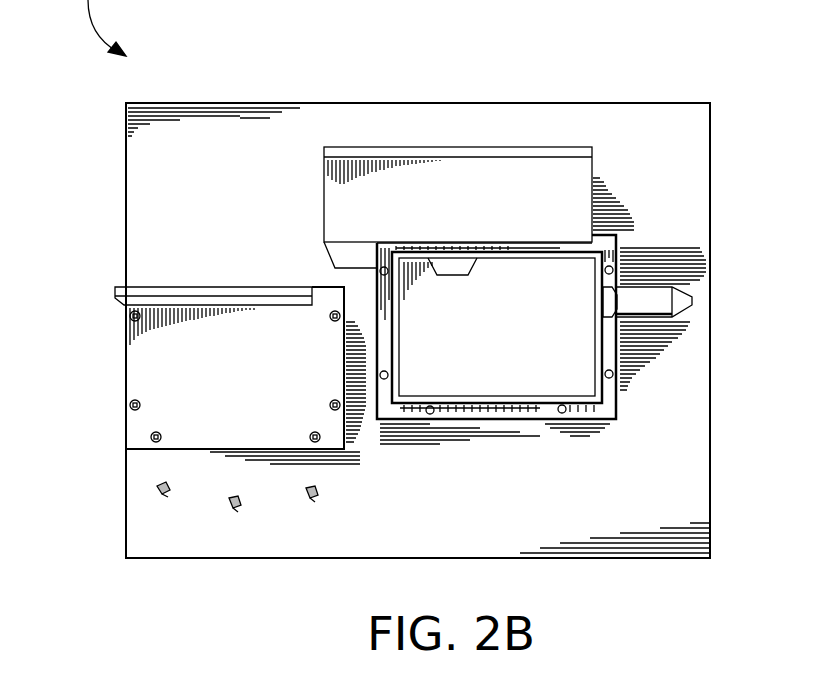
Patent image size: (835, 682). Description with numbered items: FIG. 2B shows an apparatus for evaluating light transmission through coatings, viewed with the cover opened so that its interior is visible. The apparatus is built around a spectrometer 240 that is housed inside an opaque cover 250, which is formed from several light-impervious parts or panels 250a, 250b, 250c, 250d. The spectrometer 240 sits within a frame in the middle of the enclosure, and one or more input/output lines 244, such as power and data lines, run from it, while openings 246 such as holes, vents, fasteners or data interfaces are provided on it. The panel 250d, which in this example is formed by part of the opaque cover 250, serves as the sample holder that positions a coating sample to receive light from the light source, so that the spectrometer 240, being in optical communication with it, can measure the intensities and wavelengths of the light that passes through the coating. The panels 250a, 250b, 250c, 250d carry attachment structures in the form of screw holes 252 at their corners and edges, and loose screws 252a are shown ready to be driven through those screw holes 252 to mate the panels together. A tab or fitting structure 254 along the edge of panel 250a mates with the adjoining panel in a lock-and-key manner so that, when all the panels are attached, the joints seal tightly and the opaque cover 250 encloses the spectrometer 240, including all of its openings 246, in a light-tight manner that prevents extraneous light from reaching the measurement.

The spectrometer 240 is at (570, 368).
The input/output lines 244 is at (660, 303).
The openings 246 is at (605, 332).
The opaque cover 250 is at (425, 182).
The panel 250a is at (165, 382).
The panel 250b is at (620, 252).
The panel 250c is at (580, 203).
The sample holder 250d is at (577, 150).
The screw holes 252 is at (129, 315).
The screws 252a is at (158, 488).
The tabs or fitting structures 254 is at (197, 290).